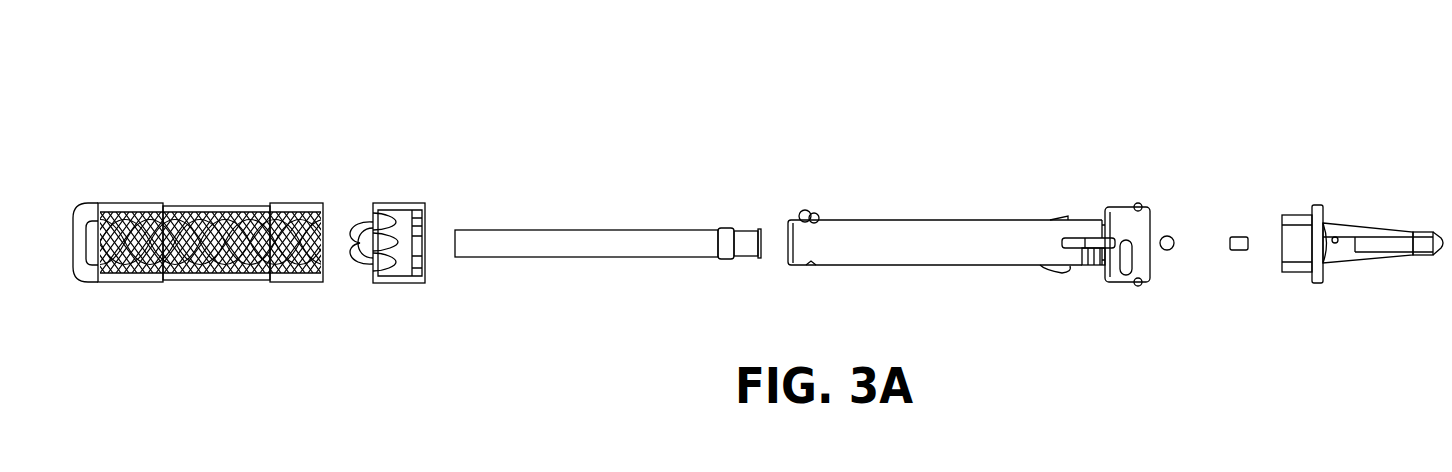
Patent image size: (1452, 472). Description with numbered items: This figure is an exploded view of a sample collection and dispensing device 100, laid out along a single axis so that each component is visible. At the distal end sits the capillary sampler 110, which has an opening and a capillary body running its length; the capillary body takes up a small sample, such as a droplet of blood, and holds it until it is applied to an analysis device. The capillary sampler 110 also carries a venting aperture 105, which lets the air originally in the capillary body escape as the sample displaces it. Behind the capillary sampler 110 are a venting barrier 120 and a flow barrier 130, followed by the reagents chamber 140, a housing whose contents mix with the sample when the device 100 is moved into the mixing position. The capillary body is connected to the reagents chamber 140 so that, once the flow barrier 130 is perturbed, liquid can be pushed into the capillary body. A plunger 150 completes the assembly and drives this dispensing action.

The sample collection and dispensing device 100 is at (399, 195).
The venting aperture 105 is at (1334, 232).
The capillary sampler 110 is at (1383, 219).
The venting barrier 120 is at (1240, 236).
The flow barrier 130 is at (1170, 236).
The reagents chamber 140 is at (946, 216).
The plunger 150 is at (575, 226).